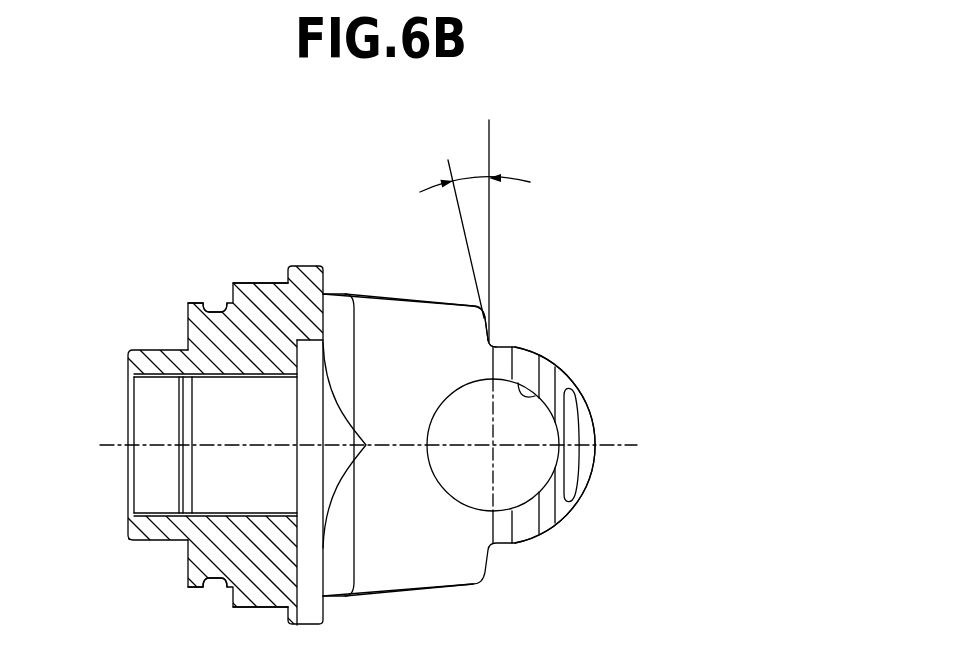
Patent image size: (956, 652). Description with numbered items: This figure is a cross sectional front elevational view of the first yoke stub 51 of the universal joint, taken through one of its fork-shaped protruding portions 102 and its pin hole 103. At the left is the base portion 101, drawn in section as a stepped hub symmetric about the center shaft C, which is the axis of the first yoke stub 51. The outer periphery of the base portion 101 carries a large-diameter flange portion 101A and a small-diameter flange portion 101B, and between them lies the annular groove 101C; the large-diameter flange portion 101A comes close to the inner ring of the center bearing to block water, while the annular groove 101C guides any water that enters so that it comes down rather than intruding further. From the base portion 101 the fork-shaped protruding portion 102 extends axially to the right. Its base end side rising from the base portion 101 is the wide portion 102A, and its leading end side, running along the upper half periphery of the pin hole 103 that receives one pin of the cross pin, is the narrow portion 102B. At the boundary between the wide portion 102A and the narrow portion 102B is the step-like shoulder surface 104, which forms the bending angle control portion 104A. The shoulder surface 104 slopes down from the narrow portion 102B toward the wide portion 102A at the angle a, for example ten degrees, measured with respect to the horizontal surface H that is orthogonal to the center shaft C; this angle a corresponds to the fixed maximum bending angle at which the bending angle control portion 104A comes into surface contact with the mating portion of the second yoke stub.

The base portion 101 is at (278, 297).
The large-diameter flange portion 101A is at (242, 282).
The small-diameter flange portion 101B is at (193, 300).
The annular groove 101C is at (217, 307).
The first yoke stub 51 is at (300, 262).
The fork-shaped protruding portion 102 is at (587, 488).
The wide portion 102A is at (390, 298).
The narrow portion 102B is at (587, 406).
The pin hole 103 is at (533, 398).
The shoulder surface 104 is at (489, 322).
The bending angle control portion 104A is at (491, 322).
The horizontal surface H is at (489, 140).
The maximum bending angle a is at (483, 239).
The center shaft C is at (617, 445).